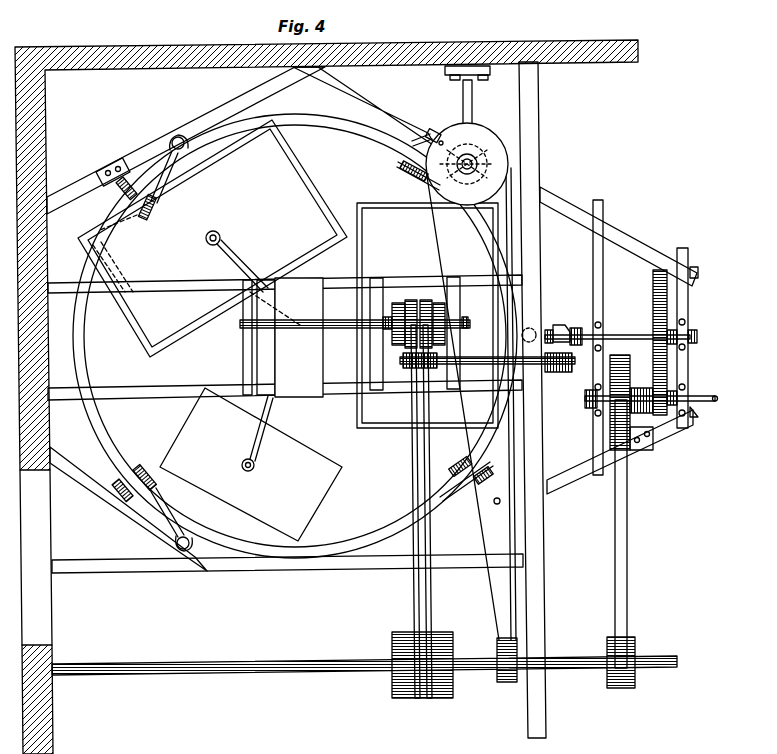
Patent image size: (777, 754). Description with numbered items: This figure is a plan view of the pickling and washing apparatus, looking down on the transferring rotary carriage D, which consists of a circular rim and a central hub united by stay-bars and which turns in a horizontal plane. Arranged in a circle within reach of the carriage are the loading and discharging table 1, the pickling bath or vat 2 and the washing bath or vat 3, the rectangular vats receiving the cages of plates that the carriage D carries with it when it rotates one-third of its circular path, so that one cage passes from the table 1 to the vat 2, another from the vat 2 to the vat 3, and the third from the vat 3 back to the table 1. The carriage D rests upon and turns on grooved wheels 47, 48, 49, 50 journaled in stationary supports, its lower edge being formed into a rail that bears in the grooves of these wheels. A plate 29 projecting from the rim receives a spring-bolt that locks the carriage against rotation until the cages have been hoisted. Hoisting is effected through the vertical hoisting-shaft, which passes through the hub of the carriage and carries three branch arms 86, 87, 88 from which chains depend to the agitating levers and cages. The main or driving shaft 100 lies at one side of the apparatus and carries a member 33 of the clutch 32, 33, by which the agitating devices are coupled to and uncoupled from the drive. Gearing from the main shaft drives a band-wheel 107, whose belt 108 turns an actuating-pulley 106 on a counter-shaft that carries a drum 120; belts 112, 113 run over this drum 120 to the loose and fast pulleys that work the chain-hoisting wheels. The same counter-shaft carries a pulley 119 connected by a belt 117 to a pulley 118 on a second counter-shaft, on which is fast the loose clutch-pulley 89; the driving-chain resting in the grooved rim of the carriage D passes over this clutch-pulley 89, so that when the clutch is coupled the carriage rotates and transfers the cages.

The loading and discharging table 1 is at (251, 464).
The pickling bath or vat 2 is at (212, 238).
The washing bath or vat 3 is at (427, 315).
The transferring rotary carriage D is at (372, 140).
The plate 29 is at (548, 306).
The clutch member 32 is at (556, 325).
The clutch member 33 is at (581, 328).
The grooved wheel 47 is at (147, 450).
The grooved wheel 48 is at (135, 210).
The grooved wheel 49 is at (402, 164).
The grooved wheel 50 is at (467, 458).
The branch arm 86 is at (276, 418).
The branch arm 87 is at (226, 242).
The branch arm 88 is at (353, 340).
The loose clutch-pulley 89 is at (490, 160).
The main or driving shaft 100 is at (648, 334).
The actuating-pulley 106 is at (613, 688).
The band-wheel 107 is at (627, 367).
The belt 108 is at (618, 575).
The belt 112 is at (412, 596).
The belt 113 is at (438, 588).
The belt 117 is at (495, 602).
The pulley 118 is at (453, 131).
The pulley 119 is at (500, 682).
The drum 120 is at (450, 698).